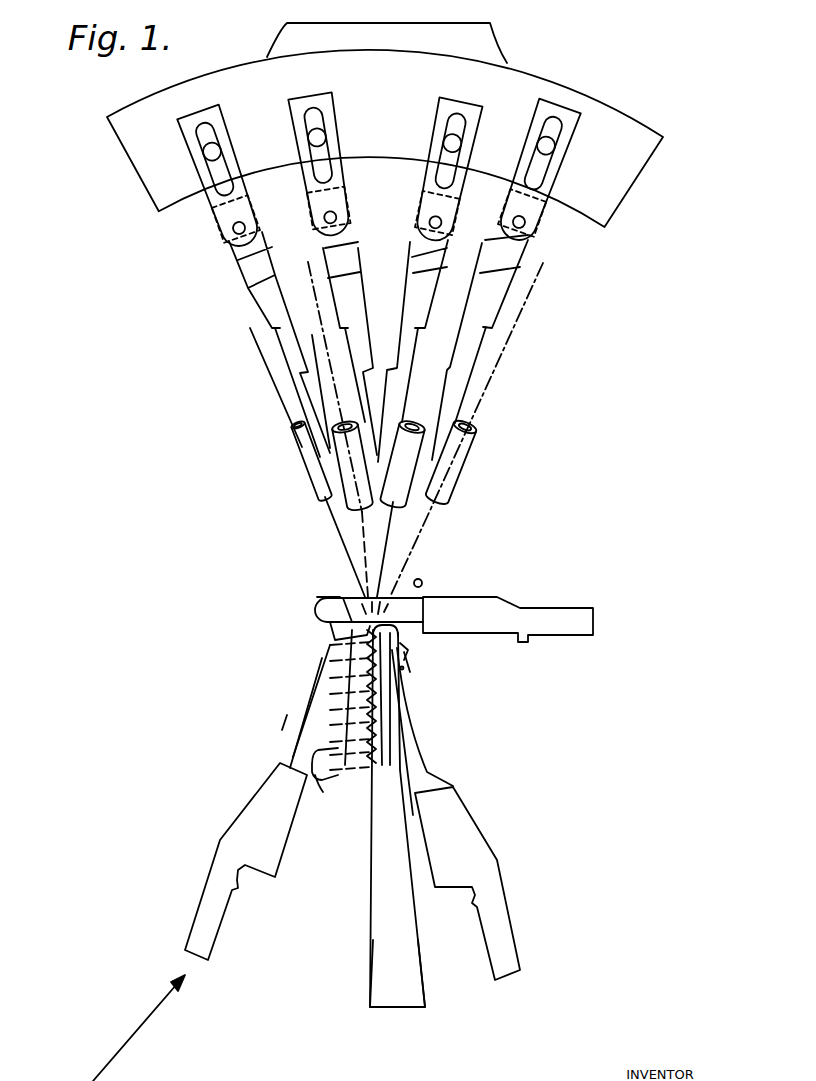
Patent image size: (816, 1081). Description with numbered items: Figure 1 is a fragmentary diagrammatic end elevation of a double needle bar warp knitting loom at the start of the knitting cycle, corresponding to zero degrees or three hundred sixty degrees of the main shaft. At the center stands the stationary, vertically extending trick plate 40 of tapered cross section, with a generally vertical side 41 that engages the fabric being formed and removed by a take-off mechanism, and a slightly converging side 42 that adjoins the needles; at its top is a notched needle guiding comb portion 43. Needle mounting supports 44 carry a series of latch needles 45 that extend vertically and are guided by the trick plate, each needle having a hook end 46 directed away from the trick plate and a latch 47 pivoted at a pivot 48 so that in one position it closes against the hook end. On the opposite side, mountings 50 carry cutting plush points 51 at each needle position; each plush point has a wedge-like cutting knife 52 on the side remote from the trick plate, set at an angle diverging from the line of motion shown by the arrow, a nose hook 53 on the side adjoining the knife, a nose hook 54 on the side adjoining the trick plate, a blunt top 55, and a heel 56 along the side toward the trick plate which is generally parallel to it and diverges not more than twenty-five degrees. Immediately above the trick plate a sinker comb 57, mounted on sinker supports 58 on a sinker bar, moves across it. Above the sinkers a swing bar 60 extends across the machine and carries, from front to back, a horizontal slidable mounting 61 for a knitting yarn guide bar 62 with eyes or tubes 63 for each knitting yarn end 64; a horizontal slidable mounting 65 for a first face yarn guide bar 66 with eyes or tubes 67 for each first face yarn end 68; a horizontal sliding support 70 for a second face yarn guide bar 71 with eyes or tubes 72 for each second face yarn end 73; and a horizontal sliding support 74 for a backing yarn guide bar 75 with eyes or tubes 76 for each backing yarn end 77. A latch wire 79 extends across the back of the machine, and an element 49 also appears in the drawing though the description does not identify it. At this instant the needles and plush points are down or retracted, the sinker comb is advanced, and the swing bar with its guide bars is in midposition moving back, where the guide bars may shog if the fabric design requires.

The trick plate 40 is at (385, 940).
The side of trick plate 41 is at (370, 1000).
The side of trick plate 42 is at (426, 997).
The needle guiding comb portion 43 is at (398, 637).
The needle mounting supports 44 is at (480, 853).
The latch needles 45 is at (413, 738).
The hook ends 46 is at (408, 648).
The latches 47 is at (408, 655).
The pivot 48 is at (403, 669).
The inner rod 49 is at (386, 709).
The mountings 50 is at (246, 861).
The cutting plush points 51 is at (317, 713).
The cutting knives 52 is at (307, 693).
The nose hook 53 is at (330, 632).
The nose hook 54 is at (343, 598).
The blunt top 55 is at (328, 603).
The heel 56 is at (327, 779).
The sinker comb 57 is at (369, 610).
The sinker supports 58 is at (508, 619).
The swing bar 60 is at (623, 165).
The horizontal slidable mounting 61 is at (210, 205).
The knitting yarn guide bar 62 is at (265, 298).
The eyes or tubes 63 is at (305, 465).
The knitting yarn end 64 is at (270, 372).
The horizontal slidable mounting 65 is at (343, 178).
The first face yarn guide bar 66 is at (350, 295).
The eyes or tubes 67 is at (360, 513).
The first face yarn end 68 is at (336, 392).
The horizontal sliding support 70 is at (422, 208).
The second face yarn guide bar 71 is at (413, 257).
The eyes or tubes 72 is at (423, 420).
The second face yarn end 73 is at (458, 256).
The horizontal sliding support 74 is at (533, 217).
The backing yarn guide bar 75 is at (510, 287).
The eyes or tubes 76 is at (463, 463).
The backing yarn end 77 is at (530, 292).
The latch wire 79 is at (422, 581).